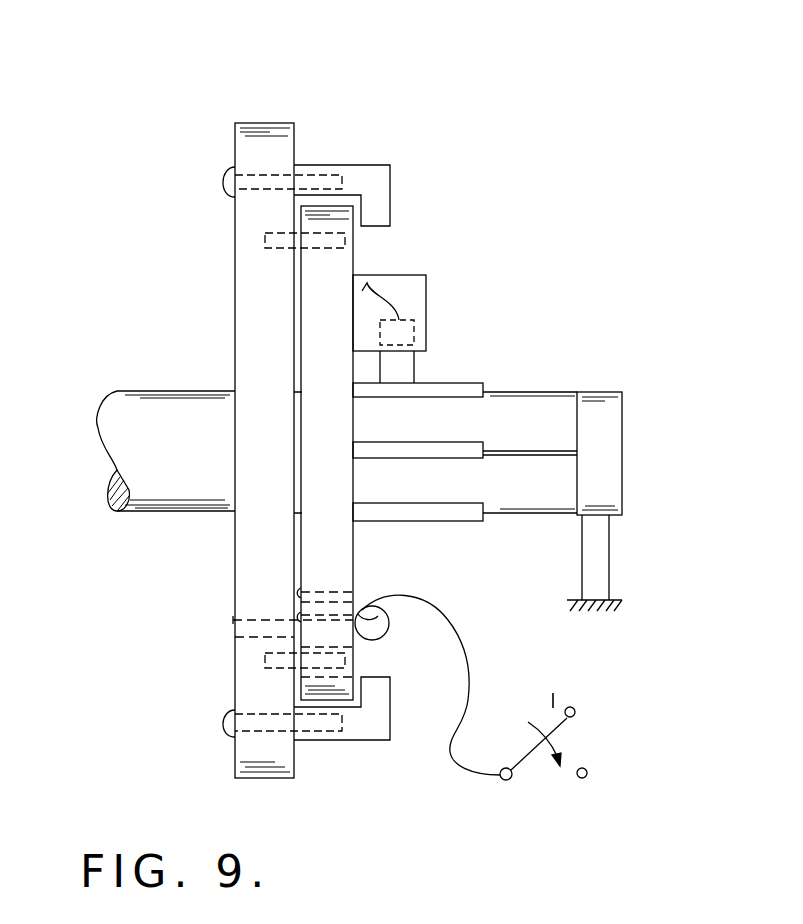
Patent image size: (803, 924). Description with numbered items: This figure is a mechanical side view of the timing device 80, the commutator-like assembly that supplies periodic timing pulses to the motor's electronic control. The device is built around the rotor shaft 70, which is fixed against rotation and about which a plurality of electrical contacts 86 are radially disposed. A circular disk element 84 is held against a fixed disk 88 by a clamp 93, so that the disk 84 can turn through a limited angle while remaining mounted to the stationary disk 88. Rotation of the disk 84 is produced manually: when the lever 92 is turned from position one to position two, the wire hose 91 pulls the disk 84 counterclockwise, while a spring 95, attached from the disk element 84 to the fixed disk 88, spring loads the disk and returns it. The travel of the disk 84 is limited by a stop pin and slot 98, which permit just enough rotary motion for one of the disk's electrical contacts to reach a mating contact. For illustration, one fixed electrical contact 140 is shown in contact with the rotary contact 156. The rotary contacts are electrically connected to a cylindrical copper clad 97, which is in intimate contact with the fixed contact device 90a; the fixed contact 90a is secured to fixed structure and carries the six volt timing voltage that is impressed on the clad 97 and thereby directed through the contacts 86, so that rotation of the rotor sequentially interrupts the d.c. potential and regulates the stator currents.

The shaft 70 is at (113, 397).
The timing device 80 is at (392, 78).
The circular disk element 84 is at (353, 548).
The electrical contacts 86 is at (426, 320).
The fixed disk 88 is at (235, 583).
The fixed contact device 90a is at (609, 568).
The wire hose 91 is at (473, 673).
The lever 92 is at (555, 728).
The clamp 93 is at (390, 165).
The spring 95 is at (388, 637).
The cylindrical copper clad 97 is at (622, 430).
The stop pin and slot 98 is at (345, 240).
The fixed electrical contact 140 is at (415, 377).
The rotary contact 156 is at (483, 383).